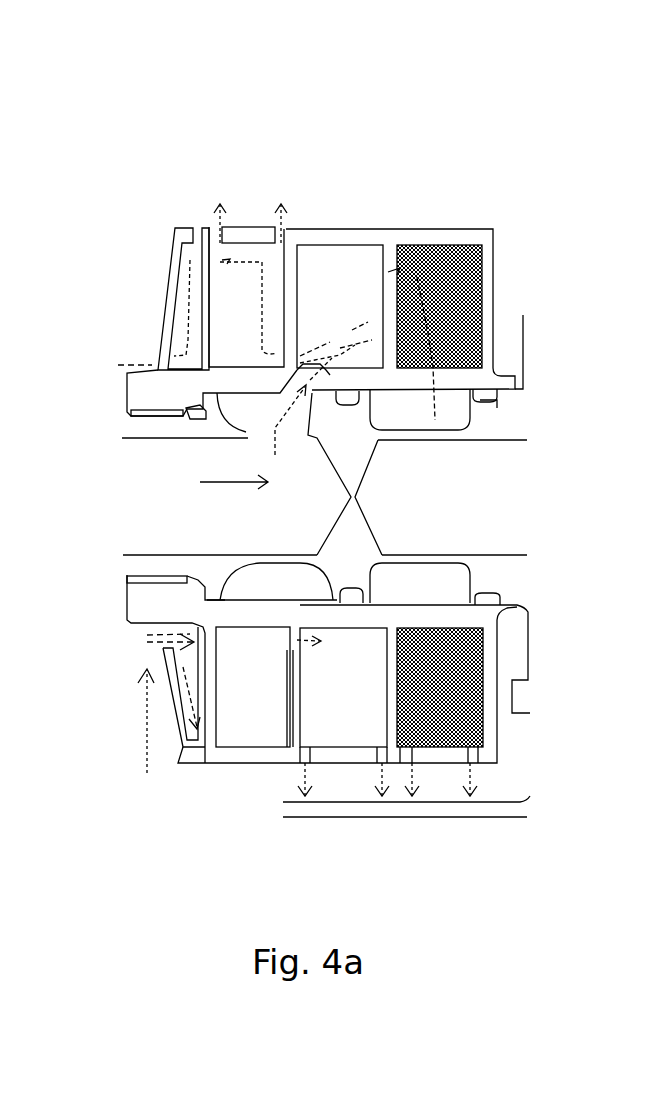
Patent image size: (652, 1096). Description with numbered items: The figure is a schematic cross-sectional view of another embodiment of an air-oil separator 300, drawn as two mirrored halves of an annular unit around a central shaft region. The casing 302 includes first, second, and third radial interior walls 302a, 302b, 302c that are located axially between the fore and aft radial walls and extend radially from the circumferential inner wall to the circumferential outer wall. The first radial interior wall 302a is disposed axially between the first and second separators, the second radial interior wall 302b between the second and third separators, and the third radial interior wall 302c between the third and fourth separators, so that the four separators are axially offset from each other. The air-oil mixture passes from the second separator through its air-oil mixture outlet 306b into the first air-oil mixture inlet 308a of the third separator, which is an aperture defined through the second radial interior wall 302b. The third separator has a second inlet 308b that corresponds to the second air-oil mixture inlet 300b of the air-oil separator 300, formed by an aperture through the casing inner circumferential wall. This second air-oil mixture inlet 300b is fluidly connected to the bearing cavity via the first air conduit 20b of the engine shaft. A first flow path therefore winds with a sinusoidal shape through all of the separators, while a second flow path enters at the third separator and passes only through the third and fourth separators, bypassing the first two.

The air-oil separator 300 is at (598, 152).
The casing 302 is at (504, 243).
The first radial interior wall 302a is at (204, 316).
The second radial interior wall 302b is at (298, 270).
The third radial interior wall 302c is at (416, 278).
The first air conduit 20b is at (160, 521).
The second air-oil mixture inlet 300b is at (316, 366).
The air-oil mixture inlet 308b is at (296, 454).
The air-oil mixture inlet 308a is at (278, 641).
The air-oil mixture outlet 306b is at (374, 740).